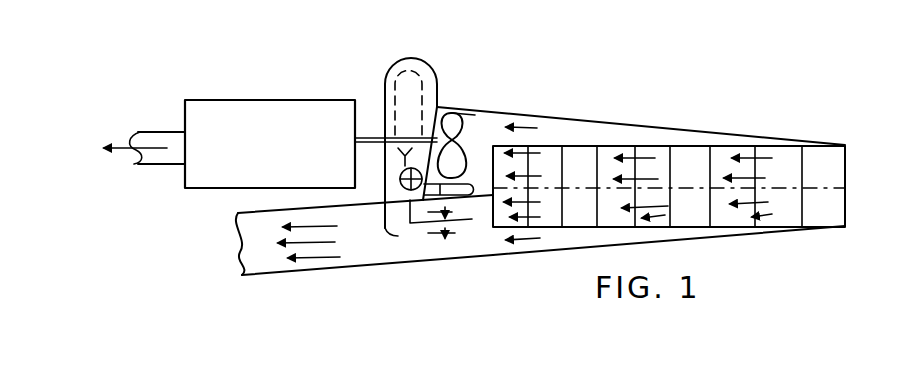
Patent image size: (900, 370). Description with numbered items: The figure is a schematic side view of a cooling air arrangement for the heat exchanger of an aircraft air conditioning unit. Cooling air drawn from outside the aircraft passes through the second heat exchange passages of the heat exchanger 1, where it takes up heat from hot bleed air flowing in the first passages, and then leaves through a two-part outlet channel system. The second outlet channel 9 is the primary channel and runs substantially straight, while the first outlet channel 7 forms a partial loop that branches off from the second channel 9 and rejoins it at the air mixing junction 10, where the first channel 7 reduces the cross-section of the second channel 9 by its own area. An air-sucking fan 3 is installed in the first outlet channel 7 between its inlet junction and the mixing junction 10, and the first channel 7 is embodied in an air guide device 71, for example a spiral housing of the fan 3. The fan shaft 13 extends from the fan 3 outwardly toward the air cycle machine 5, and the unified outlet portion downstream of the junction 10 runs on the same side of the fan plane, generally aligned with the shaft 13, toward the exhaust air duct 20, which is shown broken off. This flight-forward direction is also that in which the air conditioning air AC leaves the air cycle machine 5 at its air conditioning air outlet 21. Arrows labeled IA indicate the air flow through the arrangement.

The heat exchanger 1 is at (836, 178).
The fan 3 is at (470, 157).
The air cycle machine 5 is at (209, 190).
The first outlet channel 7 is at (477, 114).
The second outlet channel 9 is at (258, 266).
The air mixing junction 10 is at (395, 238).
The fan shaft 13 is at (367, 137).
The exhaust air duct 20 is at (242, 262).
The air conditioning air outlet 21 is at (155, 131).
The air guide device 71 is at (427, 63).
The incident light IA is at (352, 226).
The air conditioning air AC is at (69, 151).